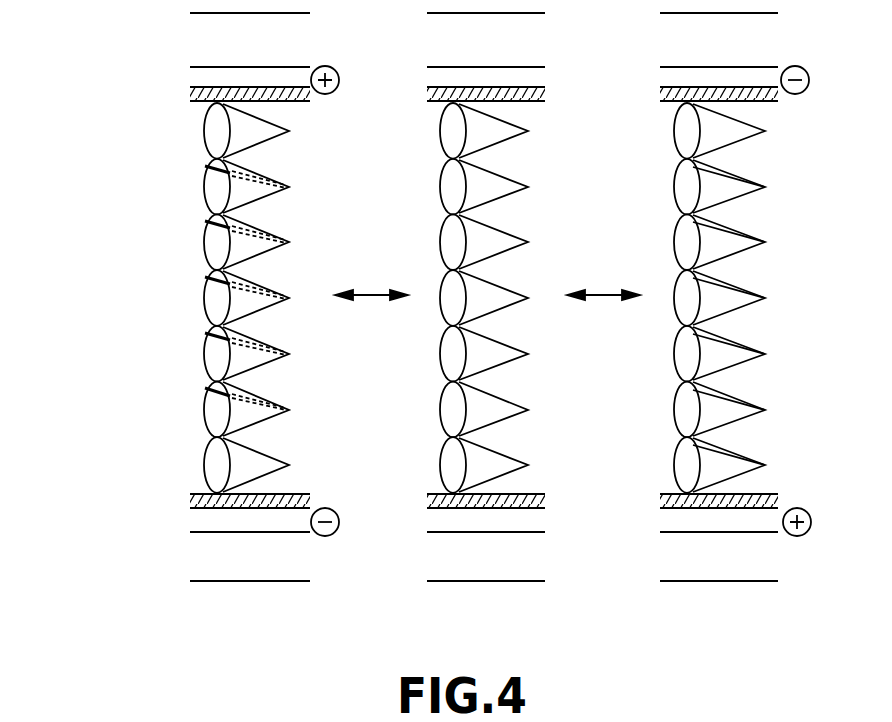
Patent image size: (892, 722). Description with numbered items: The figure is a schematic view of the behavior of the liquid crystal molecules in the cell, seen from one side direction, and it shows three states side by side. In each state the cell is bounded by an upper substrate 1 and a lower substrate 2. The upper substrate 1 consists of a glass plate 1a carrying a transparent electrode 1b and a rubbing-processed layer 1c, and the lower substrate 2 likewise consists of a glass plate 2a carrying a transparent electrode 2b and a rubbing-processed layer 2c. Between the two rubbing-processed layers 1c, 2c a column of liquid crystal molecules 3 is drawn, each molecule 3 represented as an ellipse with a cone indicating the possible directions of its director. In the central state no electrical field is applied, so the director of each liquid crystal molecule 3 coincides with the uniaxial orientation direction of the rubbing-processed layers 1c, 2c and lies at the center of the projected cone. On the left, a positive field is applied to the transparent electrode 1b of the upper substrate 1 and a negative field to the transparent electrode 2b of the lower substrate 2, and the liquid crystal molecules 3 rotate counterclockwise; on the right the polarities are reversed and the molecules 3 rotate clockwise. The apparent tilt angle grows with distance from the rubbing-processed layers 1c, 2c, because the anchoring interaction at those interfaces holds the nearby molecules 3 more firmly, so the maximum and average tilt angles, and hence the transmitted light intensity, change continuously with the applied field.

The upper substrate 1 is at (429, 65).
The glass plate 1a is at (197, 41).
The transparent electrode 1b is at (197, 74).
The rubbing-processed layer 1c is at (446, 100).
The lower substrate 2 is at (429, 530).
The glass plate 2a is at (446, 562).
The transparent electrode 2b is at (197, 520).
The rubbing-processed layer 2c is at (191, 499).
The liquid crystal molecule 3 is at (280, 122).